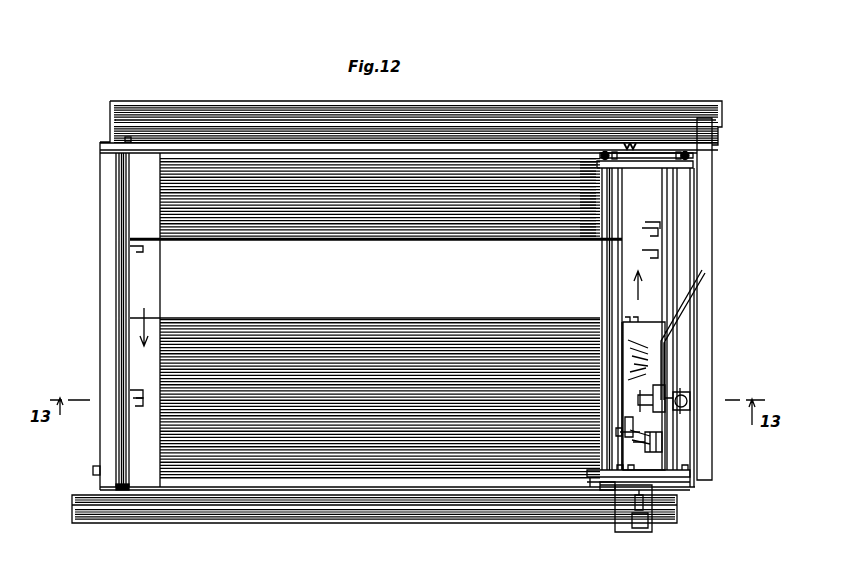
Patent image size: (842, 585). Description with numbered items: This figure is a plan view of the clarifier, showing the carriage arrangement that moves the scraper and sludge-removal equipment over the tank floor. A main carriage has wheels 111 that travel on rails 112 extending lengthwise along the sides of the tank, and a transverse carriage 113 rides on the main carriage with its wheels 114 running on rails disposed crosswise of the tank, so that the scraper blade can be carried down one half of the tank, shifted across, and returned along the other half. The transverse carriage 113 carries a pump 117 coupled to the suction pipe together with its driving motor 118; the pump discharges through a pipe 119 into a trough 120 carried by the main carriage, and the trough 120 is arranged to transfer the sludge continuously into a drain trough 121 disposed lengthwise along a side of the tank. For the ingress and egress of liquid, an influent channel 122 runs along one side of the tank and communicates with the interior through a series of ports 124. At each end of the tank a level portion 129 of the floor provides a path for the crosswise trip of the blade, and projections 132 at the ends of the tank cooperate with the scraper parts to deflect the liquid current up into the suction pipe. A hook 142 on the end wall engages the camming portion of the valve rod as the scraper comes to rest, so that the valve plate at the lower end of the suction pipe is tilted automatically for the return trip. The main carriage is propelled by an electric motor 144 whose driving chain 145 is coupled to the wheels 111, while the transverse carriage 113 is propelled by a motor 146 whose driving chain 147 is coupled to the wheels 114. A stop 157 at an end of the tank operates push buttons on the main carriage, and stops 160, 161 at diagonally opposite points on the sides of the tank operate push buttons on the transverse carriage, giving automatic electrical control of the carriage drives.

The wheels 111 is at (594, 476).
The rails 112 is at (557, 150).
The transverse carriage 113 is at (660, 426).
The wheels 114 is at (672, 184).
The pump 117 is at (666, 392).
The driving motor 118 is at (690, 396).
The pipe 119 is at (698, 292).
The trough 120 is at (706, 185).
The drain trough 121 is at (526, 110).
The influent channel 122 is at (232, 513).
The ports 124 is at (116, 128).
The level portion 129 is at (140, 295).
The projections 132 is at (128, 250).
The hook 142 is at (142, 403).
The electric motor 144 is at (640, 528).
The driving chain 145 is at (616, 491).
The motor 146 is at (665, 440).
The driving chain 147 is at (624, 427).
The stop 157 is at (93, 470).
The stop 160 is at (630, 150).
The stop 161 is at (123, 491).